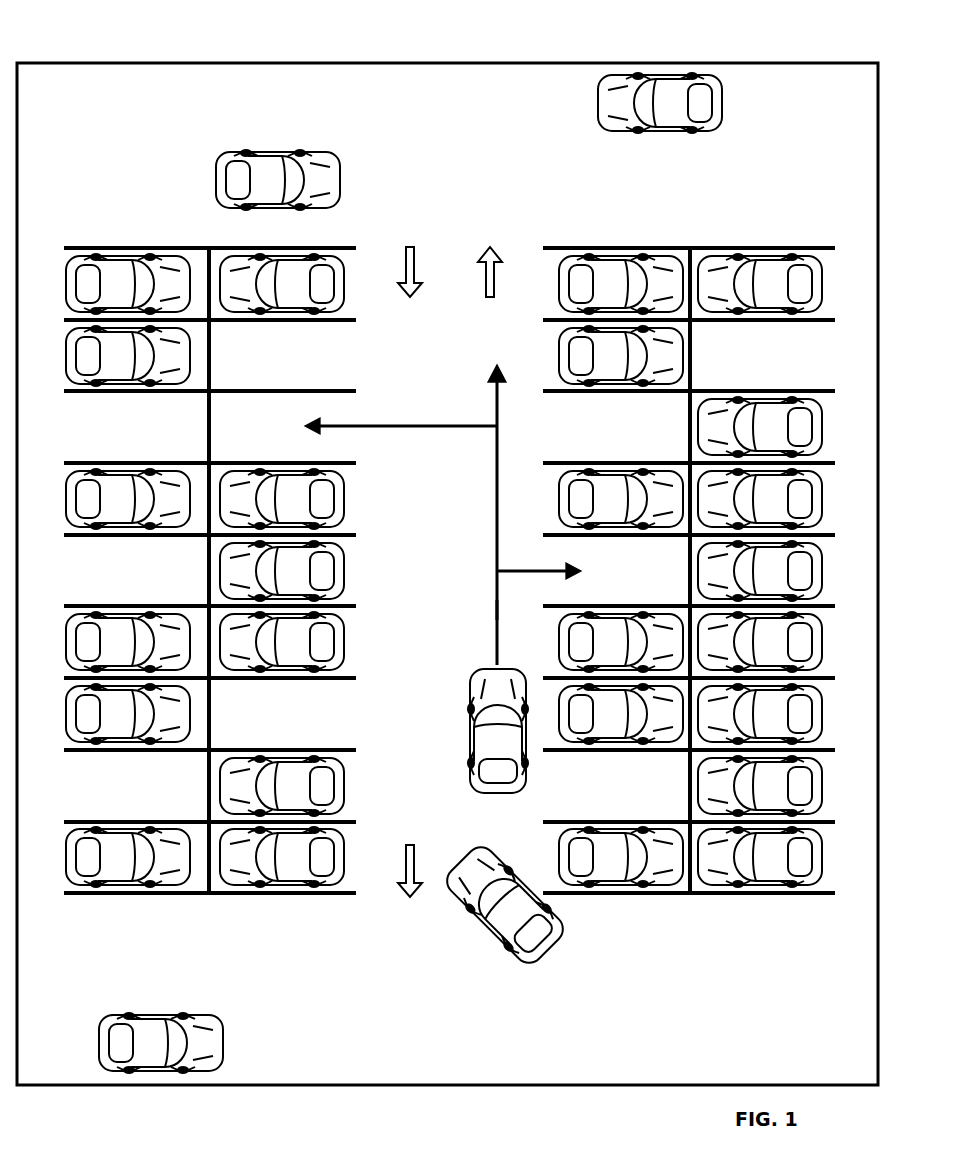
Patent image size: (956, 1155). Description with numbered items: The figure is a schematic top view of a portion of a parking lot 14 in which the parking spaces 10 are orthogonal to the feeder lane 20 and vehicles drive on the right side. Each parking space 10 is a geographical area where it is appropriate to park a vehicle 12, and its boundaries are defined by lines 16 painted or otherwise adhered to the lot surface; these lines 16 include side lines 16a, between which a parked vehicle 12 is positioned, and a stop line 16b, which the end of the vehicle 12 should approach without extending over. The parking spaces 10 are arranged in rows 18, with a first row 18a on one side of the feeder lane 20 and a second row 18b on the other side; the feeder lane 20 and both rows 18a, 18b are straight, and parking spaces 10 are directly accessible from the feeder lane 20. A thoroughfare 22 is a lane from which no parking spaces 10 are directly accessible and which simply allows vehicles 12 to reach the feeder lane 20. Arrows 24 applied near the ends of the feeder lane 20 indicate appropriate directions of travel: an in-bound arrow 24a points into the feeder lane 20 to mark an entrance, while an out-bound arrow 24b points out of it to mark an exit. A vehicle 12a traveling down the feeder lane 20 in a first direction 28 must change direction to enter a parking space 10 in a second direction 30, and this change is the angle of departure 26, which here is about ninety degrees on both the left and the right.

The parking space 10 is at (282, 378).
The vehicle 12 is at (256, 148).
The vehicle traveling down the feeder lane 12a is at (486, 666).
The parking lot 14 is at (129, 52).
The lines 16 is at (210, 262).
The side lines 16a is at (357, 321).
The stop line 16b is at (213, 347).
The row 18 is at (128, 904).
The first row 18a is at (618, 904).
The second row 18b is at (265, 904).
The feeder lane 20 is at (467, 333).
The thoroughfare 22 is at (144, 155).
The arrows 24 is at (452, 555).
The in-bound arrow 24a is at (410, 236).
The out-bound arrow 24b is at (493, 236).
The angle of departure 26 is at (493, 426).
The first direction 28 is at (497, 598).
The second direction 30 is at (430, 426).